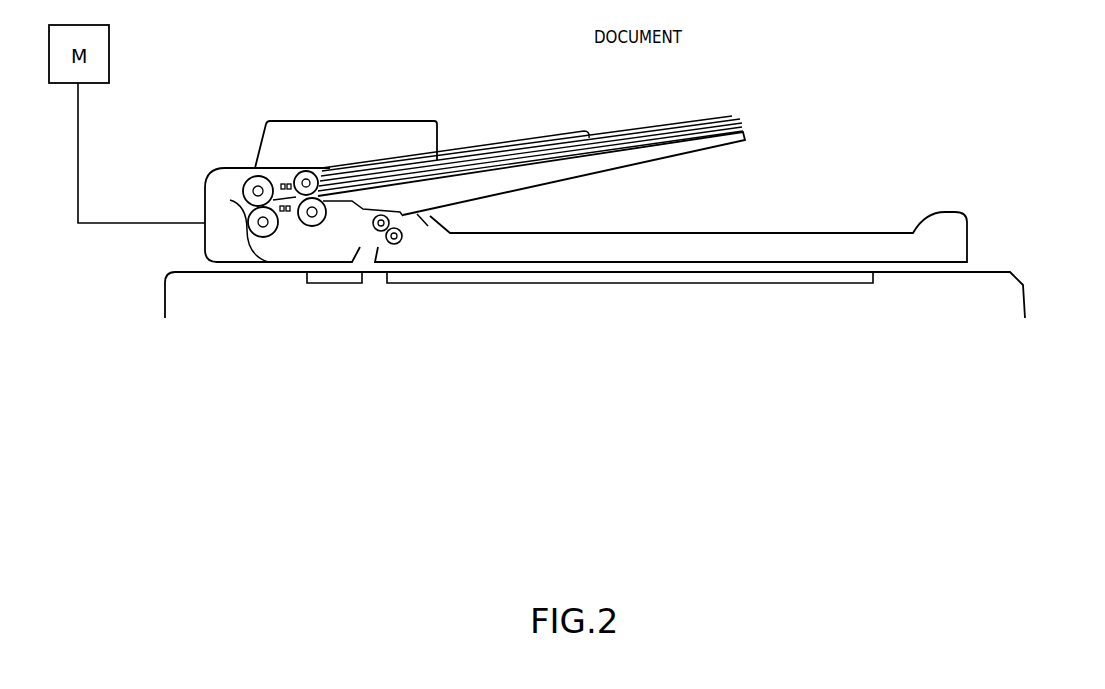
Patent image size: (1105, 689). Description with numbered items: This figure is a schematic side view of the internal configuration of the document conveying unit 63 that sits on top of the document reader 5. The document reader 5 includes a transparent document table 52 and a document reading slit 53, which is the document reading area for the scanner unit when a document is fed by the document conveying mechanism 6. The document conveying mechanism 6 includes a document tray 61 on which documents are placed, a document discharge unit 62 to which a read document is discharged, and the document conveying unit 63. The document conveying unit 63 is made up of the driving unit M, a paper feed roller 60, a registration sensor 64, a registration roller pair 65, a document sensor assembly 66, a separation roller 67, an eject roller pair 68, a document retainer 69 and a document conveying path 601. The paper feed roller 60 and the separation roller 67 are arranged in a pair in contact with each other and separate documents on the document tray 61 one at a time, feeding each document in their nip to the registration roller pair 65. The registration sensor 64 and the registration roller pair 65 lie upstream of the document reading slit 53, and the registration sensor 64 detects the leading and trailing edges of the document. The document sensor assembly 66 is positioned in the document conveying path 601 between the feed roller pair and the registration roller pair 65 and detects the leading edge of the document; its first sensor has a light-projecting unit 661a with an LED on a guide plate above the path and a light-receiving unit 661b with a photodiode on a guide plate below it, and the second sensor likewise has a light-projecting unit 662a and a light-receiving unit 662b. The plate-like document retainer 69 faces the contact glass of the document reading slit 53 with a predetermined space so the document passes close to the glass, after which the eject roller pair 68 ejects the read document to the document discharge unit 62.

The document reader 5 is at (1019, 278).
The document conveying mechanism 6 is at (1003, 89).
The document table 52 is at (452, 284).
The document reading slit 53 is at (365, 284).
The paper feed roller 60 is at (322, 168).
The document conveying path 601 is at (230, 240).
The document tray 61 is at (745, 117).
The document discharge unit 62 is at (824, 233).
The document conveying unit 63 is at (238, 166).
The registration sensor 64 is at (248, 243).
The registration roller pair 65 is at (248, 222).
The document sensor assembly 66 is at (240, 168).
The light-projecting unit 661a is at (287, 182).
The light-receiving unit 661b is at (296, 214).
The light-projecting unit 662a is at (258, 177).
The light-receiving unit 662b is at (279, 226).
The separation roller 67 is at (355, 170).
The eject roller pair 68 is at (402, 231).
The document retainer 69 is at (333, 262).